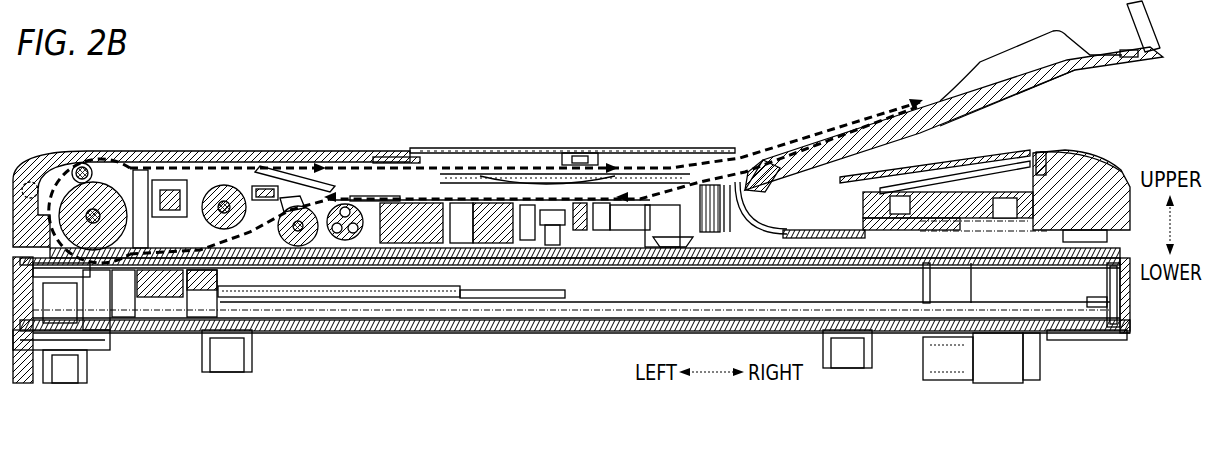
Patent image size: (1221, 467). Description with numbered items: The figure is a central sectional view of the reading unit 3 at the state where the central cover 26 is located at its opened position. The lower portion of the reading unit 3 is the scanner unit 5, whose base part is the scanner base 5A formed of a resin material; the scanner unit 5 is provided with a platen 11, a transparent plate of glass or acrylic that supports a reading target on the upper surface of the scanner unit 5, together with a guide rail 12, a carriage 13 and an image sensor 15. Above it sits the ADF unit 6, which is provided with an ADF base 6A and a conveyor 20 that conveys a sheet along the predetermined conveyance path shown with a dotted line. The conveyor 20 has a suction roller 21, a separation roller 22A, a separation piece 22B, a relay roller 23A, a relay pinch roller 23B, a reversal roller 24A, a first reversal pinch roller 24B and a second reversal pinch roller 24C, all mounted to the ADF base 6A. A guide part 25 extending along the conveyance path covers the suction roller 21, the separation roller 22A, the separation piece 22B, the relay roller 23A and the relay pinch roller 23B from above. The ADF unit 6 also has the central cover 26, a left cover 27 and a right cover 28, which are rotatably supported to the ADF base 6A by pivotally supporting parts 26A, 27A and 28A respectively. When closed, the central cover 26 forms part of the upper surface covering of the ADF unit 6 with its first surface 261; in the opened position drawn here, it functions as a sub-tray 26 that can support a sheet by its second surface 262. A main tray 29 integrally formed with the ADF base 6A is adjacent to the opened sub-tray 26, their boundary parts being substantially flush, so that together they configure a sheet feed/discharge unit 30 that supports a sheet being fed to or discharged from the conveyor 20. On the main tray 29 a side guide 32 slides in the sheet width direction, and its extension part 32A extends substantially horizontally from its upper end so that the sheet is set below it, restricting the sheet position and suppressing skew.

The reading unit 3 is at (474, 106).
The scanner unit 5 is at (1133, 303).
The scanner base 5A is at (533, 326).
The ADF unit 6 is at (1122, 170).
The ADF base 6A is at (1092, 126).
The platen 11 is at (610, 266).
The guide rail 12 is at (490, 312).
The carriage 13 is at (200, 300).
The image sensor 15 is at (165, 285).
The conveyor 20 is at (196, 127).
The suction roller 21 is at (345, 204).
The separation roller 22A is at (294, 206).
The separation piece 22B is at (286, 198).
The relay roller 23A is at (229, 186).
The relay pinch roller 23B is at (261, 186).
The reversal roller 24A is at (118, 186).
The first reversal pinch roller 24B is at (98, 180).
The second reversal pinch roller 24C is at (76, 168).
The guide part 25 is at (165, 182).
The central cover 26 is at (1086, 72).
The pivotally supporting part 26A is at (793, 167).
The first surface 261 is at (1022, 96).
The second surface 262 is at (923, 100).
The left cover 27 is at (362, 152).
The pivotally supporting part 27A is at (29, 183).
The right cover 28 is at (942, 165).
The pivotally supporting part 28A is at (1035, 170).
The main tray 29 is at (698, 182).
The sheet feed/discharge unit 30 is at (745, 132).
The side guide 32 is at (513, 200).
The extension part 32A is at (593, 170).